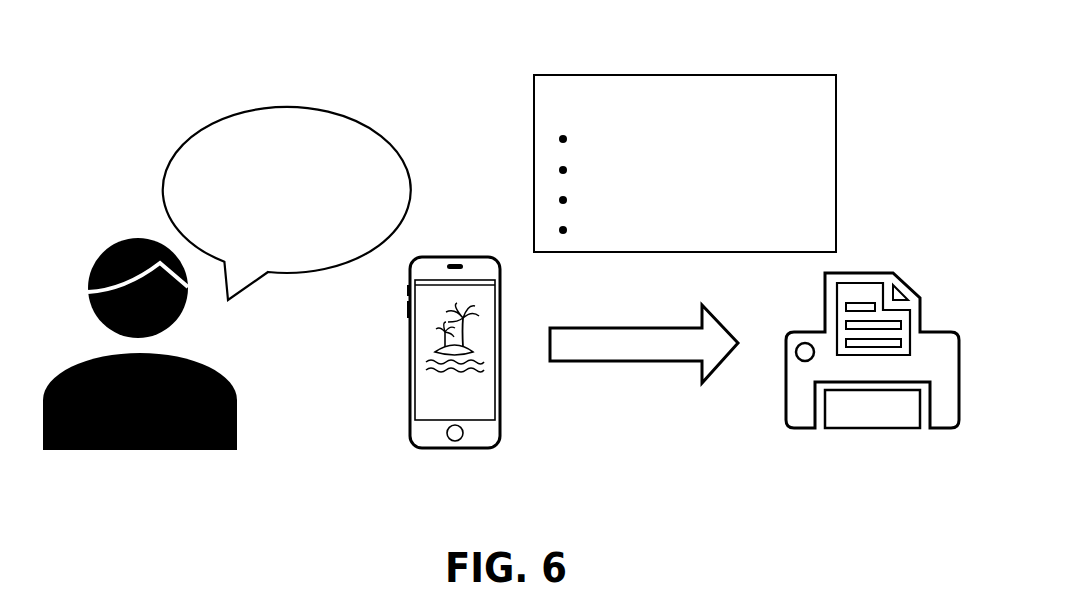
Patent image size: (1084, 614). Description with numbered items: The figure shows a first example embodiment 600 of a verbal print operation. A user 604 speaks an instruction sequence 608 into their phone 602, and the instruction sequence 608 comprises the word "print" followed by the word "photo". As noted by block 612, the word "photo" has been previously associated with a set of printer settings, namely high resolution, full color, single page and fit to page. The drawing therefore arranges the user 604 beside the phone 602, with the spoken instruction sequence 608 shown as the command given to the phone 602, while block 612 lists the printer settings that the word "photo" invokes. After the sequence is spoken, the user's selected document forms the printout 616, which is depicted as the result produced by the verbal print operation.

The first example embodiment of a verbal print operation 600 is at (909, 71).
The phone 602 is at (453, 448).
The user 604 is at (155, 450).
The instruction sequence 608 is at (355, 117).
The block 612 is at (836, 183).
The printout 616 is at (883, 428).